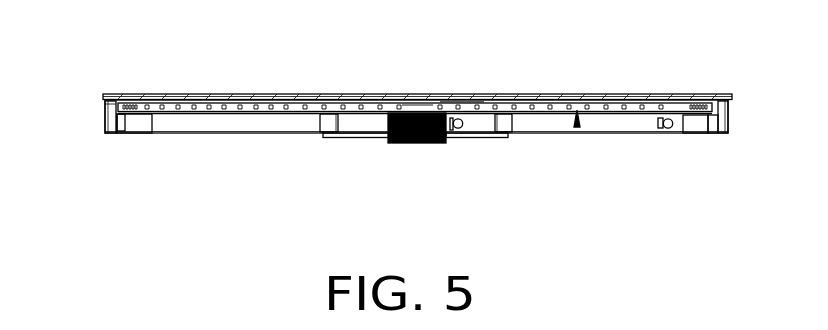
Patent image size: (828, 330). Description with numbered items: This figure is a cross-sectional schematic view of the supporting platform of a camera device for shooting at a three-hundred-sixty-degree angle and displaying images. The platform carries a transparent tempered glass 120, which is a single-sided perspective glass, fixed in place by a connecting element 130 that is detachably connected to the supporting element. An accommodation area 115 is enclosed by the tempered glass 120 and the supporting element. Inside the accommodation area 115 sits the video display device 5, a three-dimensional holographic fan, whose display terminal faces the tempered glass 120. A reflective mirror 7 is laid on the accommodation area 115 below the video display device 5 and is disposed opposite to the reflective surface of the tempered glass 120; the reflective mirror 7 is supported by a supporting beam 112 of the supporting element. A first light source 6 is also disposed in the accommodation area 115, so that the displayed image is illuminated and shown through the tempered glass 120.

The tempered glass 120 is at (282, 97).
The video display device 5 is at (410, 112).
The connecting element 130 is at (104, 106).
The supporting beam 112 is at (170, 128).
The reflective mirror 7 is at (263, 112).
The first light source 6 is at (297, 112).
The accommodation area 115 is at (578, 127).